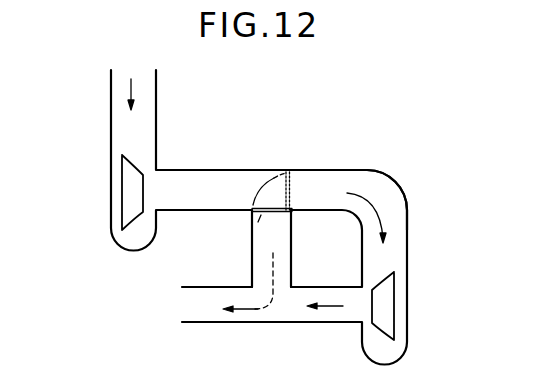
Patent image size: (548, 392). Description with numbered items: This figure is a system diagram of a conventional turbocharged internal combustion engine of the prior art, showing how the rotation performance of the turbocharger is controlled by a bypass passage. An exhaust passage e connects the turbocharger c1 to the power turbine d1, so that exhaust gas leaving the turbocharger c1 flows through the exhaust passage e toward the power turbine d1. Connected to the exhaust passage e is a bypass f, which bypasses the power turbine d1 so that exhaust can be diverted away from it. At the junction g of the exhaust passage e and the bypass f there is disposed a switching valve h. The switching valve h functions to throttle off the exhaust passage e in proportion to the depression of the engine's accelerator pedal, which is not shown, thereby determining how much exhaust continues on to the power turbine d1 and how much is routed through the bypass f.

The turbocharger c1 is at (125, 196).
The power turbine d1 is at (380, 313).
The exhaust passage e is at (385, 200).
The bypass f is at (256, 268).
The junction g is at (257, 206).
The switching valve h is at (271, 173).